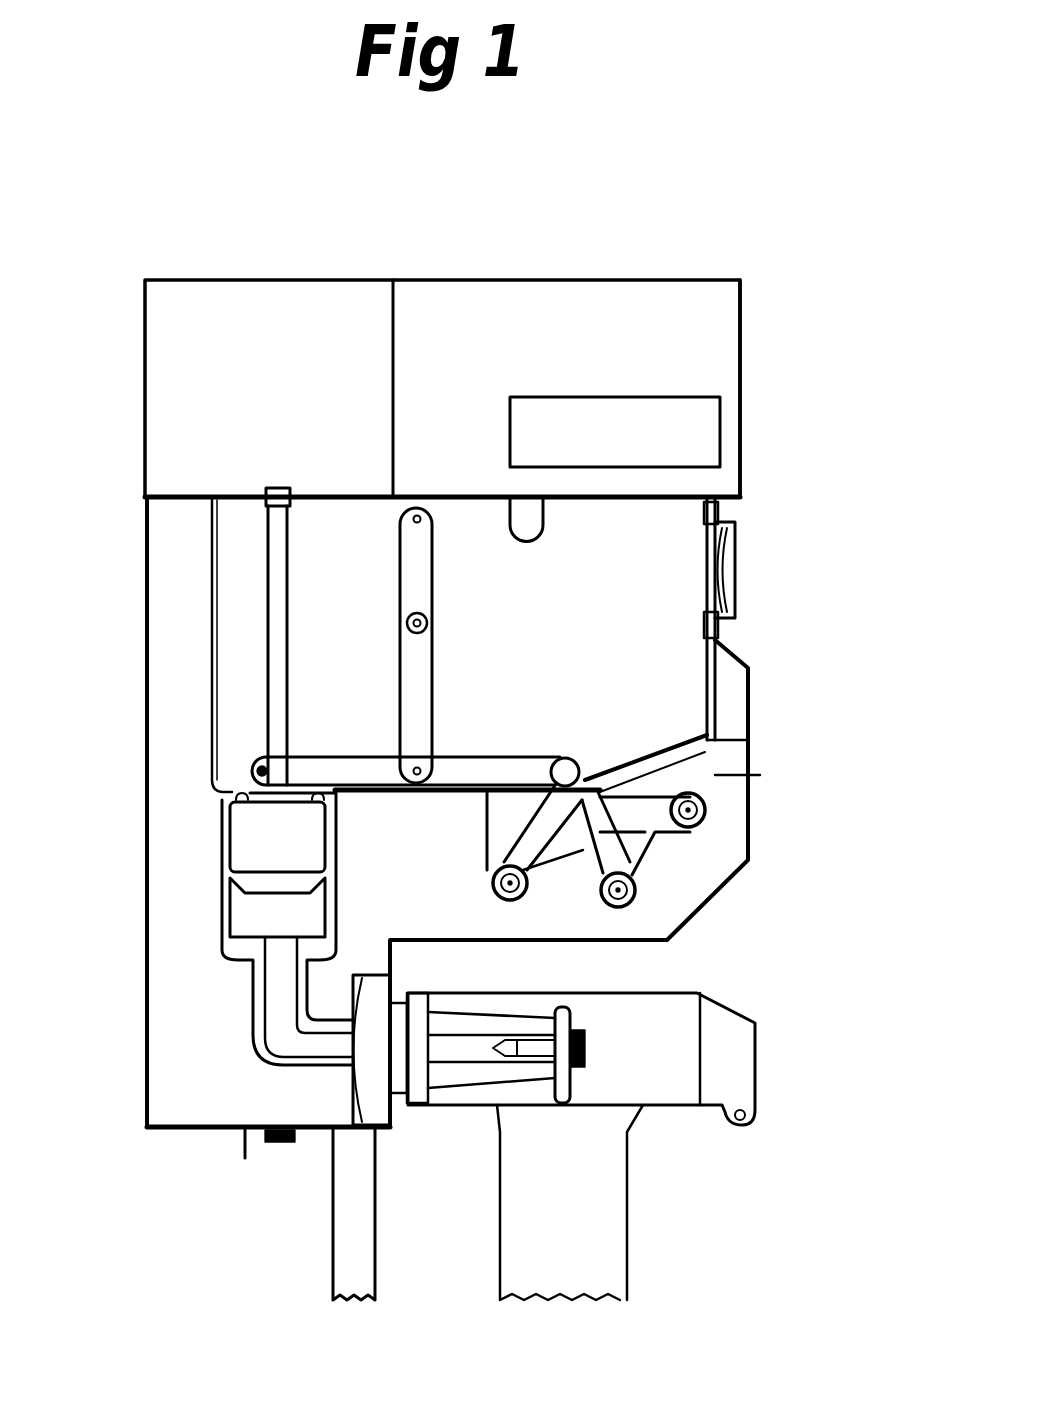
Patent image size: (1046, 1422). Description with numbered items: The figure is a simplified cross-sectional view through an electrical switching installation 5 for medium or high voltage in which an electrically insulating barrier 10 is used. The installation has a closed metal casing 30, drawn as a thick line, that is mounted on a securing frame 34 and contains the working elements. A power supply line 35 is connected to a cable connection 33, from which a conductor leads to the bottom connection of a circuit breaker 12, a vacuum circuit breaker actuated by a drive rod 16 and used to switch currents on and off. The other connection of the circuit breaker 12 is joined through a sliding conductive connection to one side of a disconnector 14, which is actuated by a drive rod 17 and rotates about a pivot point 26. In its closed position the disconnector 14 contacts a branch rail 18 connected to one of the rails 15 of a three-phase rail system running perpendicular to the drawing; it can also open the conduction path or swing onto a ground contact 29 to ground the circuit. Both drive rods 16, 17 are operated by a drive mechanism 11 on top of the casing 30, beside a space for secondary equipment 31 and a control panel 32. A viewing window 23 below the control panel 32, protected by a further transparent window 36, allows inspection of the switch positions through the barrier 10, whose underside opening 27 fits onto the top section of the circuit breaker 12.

The electrical switching installation 5 is at (632, 257).
The electrically insulating barrier 10 is at (212, 560).
The drive mechanism 11 is at (208, 347).
The circuit breaker 12 is at (260, 903).
The disconnector 14 is at (493, 775).
The rails 15 is at (635, 875).
The drive rod 16 is at (270, 632).
The drive rod 17 is at (410, 707).
The branch rail 18 is at (598, 800).
The viewing window 23 is at (735, 545).
The pivot point 26 is at (250, 768).
The opening 27 is at (222, 832).
The ground contact 29 is at (522, 520).
The closed casing 30 is at (700, 928).
The secondary equipment 31 is at (690, 440).
The control panel 32 is at (742, 307).
The cable connection 33 is at (458, 1052).
The securing frame 34 is at (355, 1220).
The power supply line 35 is at (585, 1048).
The transparent window 36 is at (735, 612).